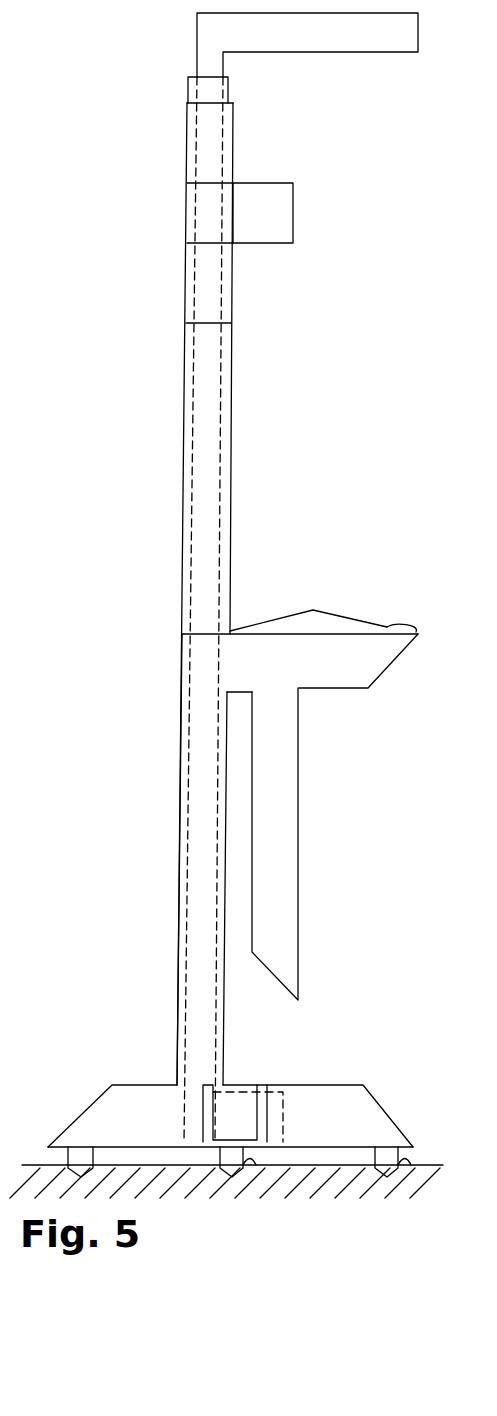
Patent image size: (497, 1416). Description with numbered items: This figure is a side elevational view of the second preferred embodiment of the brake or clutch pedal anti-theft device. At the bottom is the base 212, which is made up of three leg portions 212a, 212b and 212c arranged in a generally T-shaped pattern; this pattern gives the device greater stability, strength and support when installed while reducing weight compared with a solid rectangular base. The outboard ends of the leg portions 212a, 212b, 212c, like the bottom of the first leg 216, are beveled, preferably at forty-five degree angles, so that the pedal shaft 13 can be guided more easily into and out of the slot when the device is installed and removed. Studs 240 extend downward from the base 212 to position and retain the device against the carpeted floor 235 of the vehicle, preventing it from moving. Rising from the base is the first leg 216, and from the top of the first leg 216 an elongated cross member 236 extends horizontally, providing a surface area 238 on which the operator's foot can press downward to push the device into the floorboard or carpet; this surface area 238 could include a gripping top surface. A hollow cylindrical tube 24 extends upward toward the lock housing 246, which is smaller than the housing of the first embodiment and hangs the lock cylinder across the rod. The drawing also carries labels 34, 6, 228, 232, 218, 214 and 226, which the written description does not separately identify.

The arm 34 is at (208, 29).
The section line 6 is at (418, 2).
The cylindrical tube 24 is at (232, 380).
The hidden cable 228 is at (193, 388).
The mounting assembly 232 is at (262, 180).
The lock housing 246 is at (273, 213).
The elongated cross member 236 is at (388, 627).
The surface area 238 is at (313, 610).
The lower column portion 218 is at (181, 688).
The bracket 214 is at (315, 794).
The first leg 216 is at (283, 877).
The base 212 is at (235, 1053).
The leg portion 212a is at (372, 1097).
The leg portion 212b is at (107, 1117).
The leg portion 212c is at (268, 1120).
The hidden cable in base 226 is at (285, 1092).
The studs 240 is at (247, 1166).
The carpeted floor 235 is at (430, 1163).
The pedal shaft 13 is at (256, 1026).